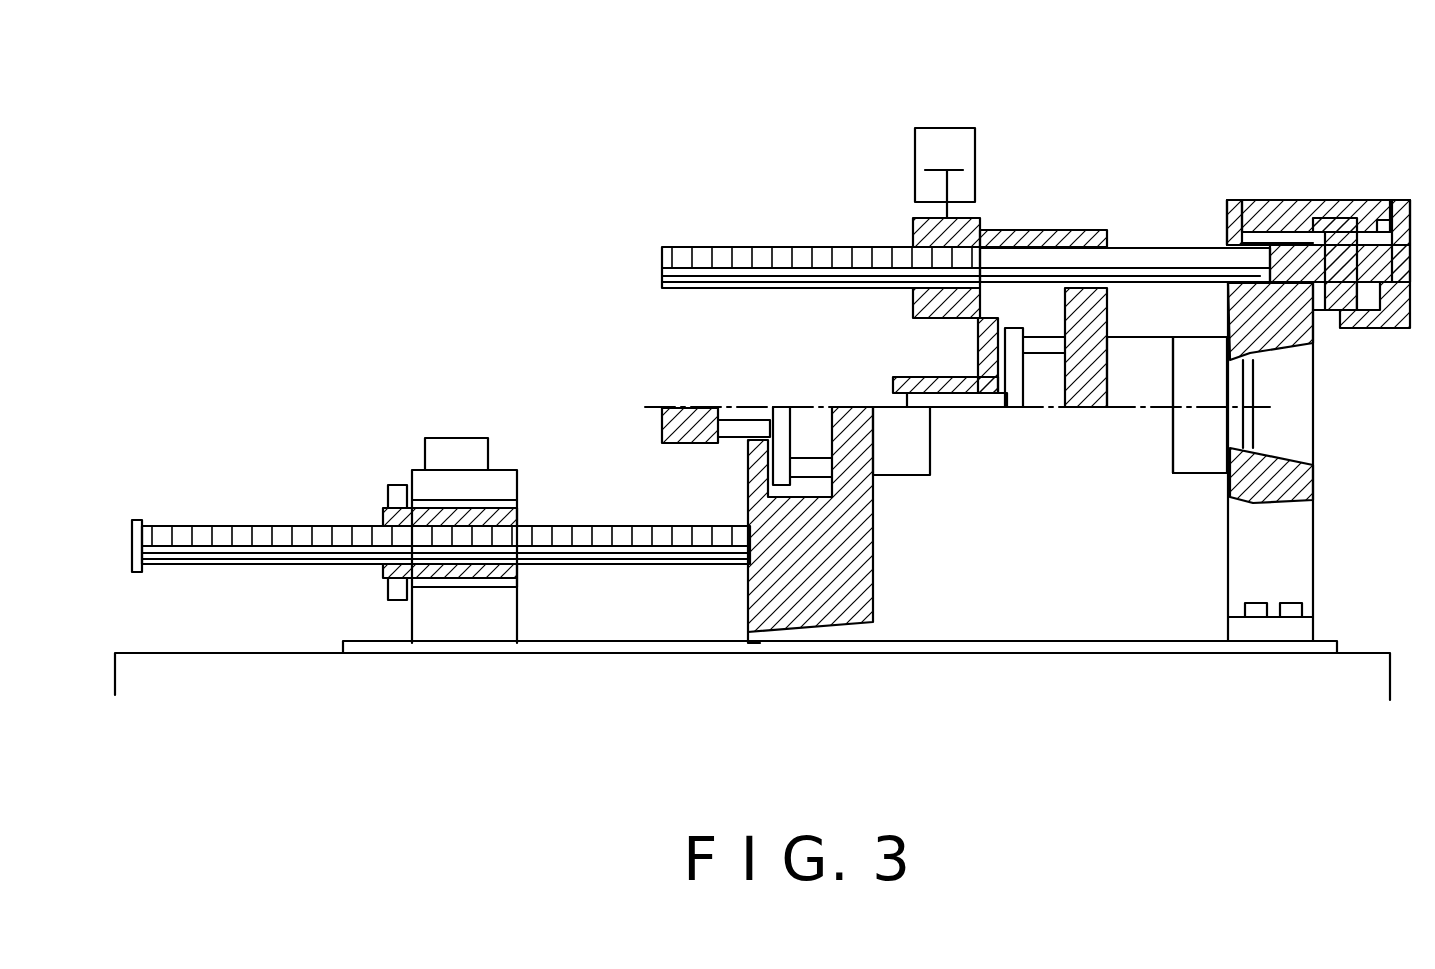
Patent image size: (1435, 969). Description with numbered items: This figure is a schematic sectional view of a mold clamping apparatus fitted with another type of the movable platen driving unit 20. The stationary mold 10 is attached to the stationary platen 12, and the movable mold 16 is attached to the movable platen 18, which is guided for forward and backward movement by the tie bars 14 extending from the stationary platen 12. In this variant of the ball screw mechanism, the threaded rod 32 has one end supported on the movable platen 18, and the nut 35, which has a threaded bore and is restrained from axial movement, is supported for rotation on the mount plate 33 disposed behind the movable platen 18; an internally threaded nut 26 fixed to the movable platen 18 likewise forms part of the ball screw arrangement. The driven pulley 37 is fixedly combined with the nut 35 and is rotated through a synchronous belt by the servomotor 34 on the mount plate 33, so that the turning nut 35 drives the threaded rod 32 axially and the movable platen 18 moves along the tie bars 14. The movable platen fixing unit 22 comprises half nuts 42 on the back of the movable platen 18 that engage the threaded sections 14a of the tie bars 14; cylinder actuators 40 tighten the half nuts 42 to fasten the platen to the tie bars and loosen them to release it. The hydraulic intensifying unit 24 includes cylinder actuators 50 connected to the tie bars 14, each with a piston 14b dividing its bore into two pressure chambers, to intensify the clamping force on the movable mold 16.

The stationary mold 10 is at (1183, 450).
The stationary platen 12 is at (1300, 430).
The tie bar 14 is at (1128, 250).
The threaded section 14a is at (737, 245).
The piston 14b is at (1340, 330).
The movable mold 16 is at (918, 452).
The movable platen 18 is at (1036, 230).
The movable platen driving unit 20 is at (449, 546).
The movable platen fixing unit 22 is at (966, 388).
The hydraulic intensifying unit 24 is at (1283, 222).
The internally threaded nut 26 is at (752, 689).
The threaded rod 32 is at (590, 525).
The mount plate 33 is at (468, 622).
The servomotor 34 is at (450, 442).
The nut 35 is at (517, 560).
The driven pulley 37 is at (392, 597).
The cylinder actuator 40 is at (944, 128).
The half nut 42 is at (913, 222).
The cylinder actuator 50 is at (1308, 158).